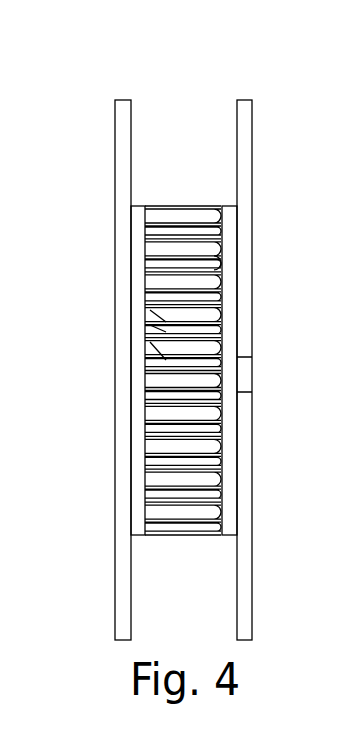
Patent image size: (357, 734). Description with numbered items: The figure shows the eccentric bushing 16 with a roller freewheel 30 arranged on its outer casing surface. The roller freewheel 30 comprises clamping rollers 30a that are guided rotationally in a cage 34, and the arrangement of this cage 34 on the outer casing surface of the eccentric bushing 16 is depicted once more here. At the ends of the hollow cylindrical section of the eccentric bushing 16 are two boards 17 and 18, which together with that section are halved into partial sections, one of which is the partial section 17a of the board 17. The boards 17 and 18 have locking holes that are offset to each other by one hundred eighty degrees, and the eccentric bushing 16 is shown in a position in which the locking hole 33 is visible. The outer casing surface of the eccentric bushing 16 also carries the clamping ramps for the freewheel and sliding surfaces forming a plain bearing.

The eccentric bushing 16 is at (254, 505).
The board 17 is at (121, 375).
The partial section 17a is at (356, 443).
The board 18 is at (245, 217).
The roller freewheel 30 is at (146, 467).
The clamping rollers 30a is at (167, 362).
The locking hole 33 is at (242, 366).
The cage 34 is at (212, 261).